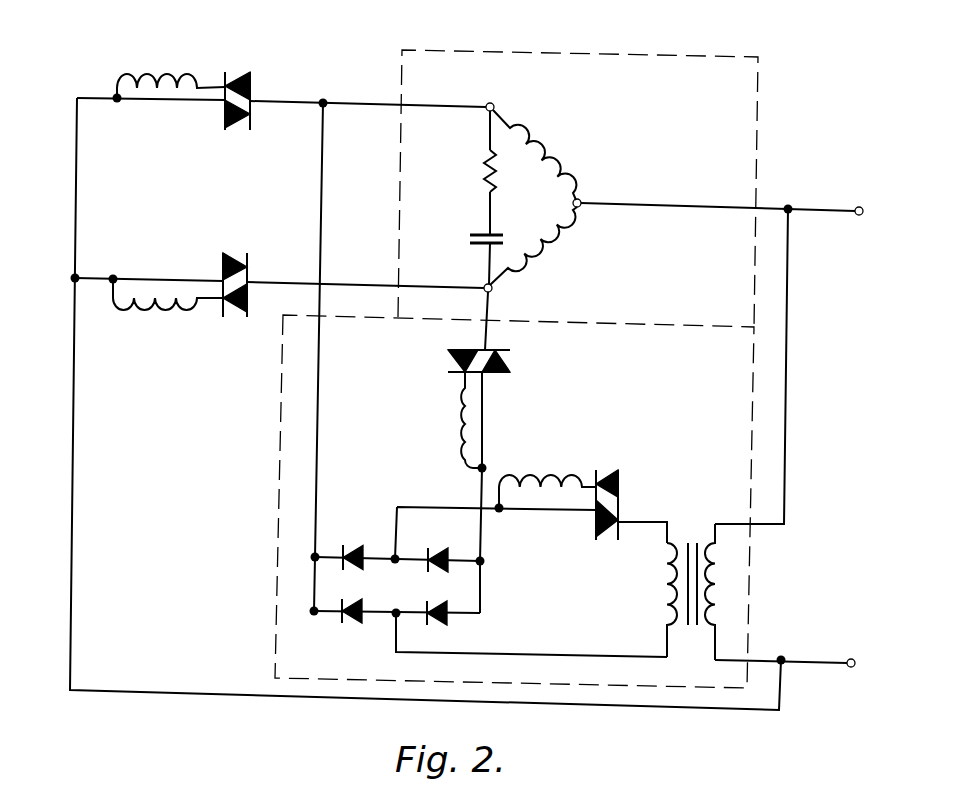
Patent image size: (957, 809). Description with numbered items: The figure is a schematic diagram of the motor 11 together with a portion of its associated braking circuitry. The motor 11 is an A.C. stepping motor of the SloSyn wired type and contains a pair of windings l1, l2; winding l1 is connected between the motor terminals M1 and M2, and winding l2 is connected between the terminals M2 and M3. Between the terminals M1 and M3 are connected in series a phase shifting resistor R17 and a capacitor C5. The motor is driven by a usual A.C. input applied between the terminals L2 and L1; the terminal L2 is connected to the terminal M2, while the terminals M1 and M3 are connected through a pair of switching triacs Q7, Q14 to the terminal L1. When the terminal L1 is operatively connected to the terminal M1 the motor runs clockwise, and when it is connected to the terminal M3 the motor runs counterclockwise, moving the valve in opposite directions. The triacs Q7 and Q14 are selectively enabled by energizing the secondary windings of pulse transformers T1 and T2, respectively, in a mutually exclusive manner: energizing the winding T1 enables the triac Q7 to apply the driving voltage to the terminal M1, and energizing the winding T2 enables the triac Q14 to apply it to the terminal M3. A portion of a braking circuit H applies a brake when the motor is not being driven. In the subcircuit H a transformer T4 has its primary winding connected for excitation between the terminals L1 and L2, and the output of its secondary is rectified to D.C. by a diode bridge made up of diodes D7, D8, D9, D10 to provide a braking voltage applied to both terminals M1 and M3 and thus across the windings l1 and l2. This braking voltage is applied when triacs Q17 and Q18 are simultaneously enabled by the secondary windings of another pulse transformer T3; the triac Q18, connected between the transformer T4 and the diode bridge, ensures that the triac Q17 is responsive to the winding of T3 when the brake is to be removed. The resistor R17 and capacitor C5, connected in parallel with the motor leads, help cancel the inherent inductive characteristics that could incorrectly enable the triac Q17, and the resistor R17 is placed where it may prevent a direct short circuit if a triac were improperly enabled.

The motor 11 is at (758, 118).
The braking circuit H is at (278, 513).
The pulse transformer T1 is at (171, 73).
The switching triac Q7 is at (238, 87).
The pulse transformer T2 is at (168, 305).
The switching triac Q14 is at (236, 270).
The motor terminal M1 is at (491, 96).
The motor terminal M2 is at (591, 192).
The motor terminal M3 is at (502, 297).
The phase shifting resistor R17 is at (470, 171).
The capacitor C5 is at (474, 236).
The winding l1 is at (538, 155).
The winding l2 is at (533, 246).
The terminal L1 is at (853, 650).
The terminal L2 is at (856, 200).
The triac Q17 is at (503, 360).
The pulse transformer T3 is at (510, 439).
The triac Q18 is at (631, 505).
The transformer T4 is at (691, 581).
The diode D7 is at (350, 542).
The diode D8 is at (438, 544).
The diode D9 is at (438, 601).
The diode D10 is at (354, 625).